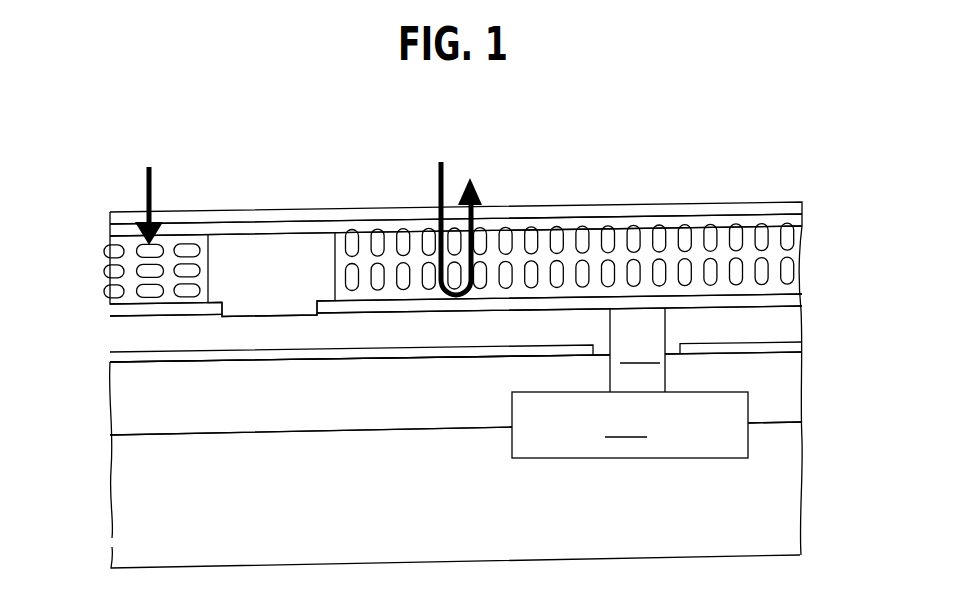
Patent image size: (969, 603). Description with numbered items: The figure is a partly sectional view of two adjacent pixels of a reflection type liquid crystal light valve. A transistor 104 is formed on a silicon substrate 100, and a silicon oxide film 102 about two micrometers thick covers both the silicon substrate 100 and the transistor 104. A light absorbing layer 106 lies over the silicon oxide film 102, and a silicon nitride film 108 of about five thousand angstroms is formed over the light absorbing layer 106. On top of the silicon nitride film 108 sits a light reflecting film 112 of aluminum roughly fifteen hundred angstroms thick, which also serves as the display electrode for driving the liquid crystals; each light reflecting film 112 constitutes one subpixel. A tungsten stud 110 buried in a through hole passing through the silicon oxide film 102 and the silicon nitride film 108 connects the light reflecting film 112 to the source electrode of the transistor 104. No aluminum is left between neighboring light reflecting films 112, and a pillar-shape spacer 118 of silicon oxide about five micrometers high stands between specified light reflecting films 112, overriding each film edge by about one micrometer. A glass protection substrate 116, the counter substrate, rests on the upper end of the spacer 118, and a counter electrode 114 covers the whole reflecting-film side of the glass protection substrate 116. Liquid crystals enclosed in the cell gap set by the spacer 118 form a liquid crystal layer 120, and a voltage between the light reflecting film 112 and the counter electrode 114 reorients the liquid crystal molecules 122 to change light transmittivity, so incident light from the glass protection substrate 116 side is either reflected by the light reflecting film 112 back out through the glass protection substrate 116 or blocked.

The silicon substrate 100 is at (790, 453).
The silicon oxide film 102 is at (787, 380).
The transistor 104 is at (630, 425).
The light absorbing layer 106 is at (110, 358).
The silicon nitride film 108 is at (790, 322).
The tungsten stud 110 is at (637, 350).
The light reflecting film 112 is at (798, 293).
The counter electrode 114 is at (798, 220).
The glass protection substrate 116 is at (772, 203).
The pillar-shape spacer 118 is at (266, 247).
The liquid crystal layer 120 is at (772, 257).
The liquid crystal molecules 122 is at (188, 245).